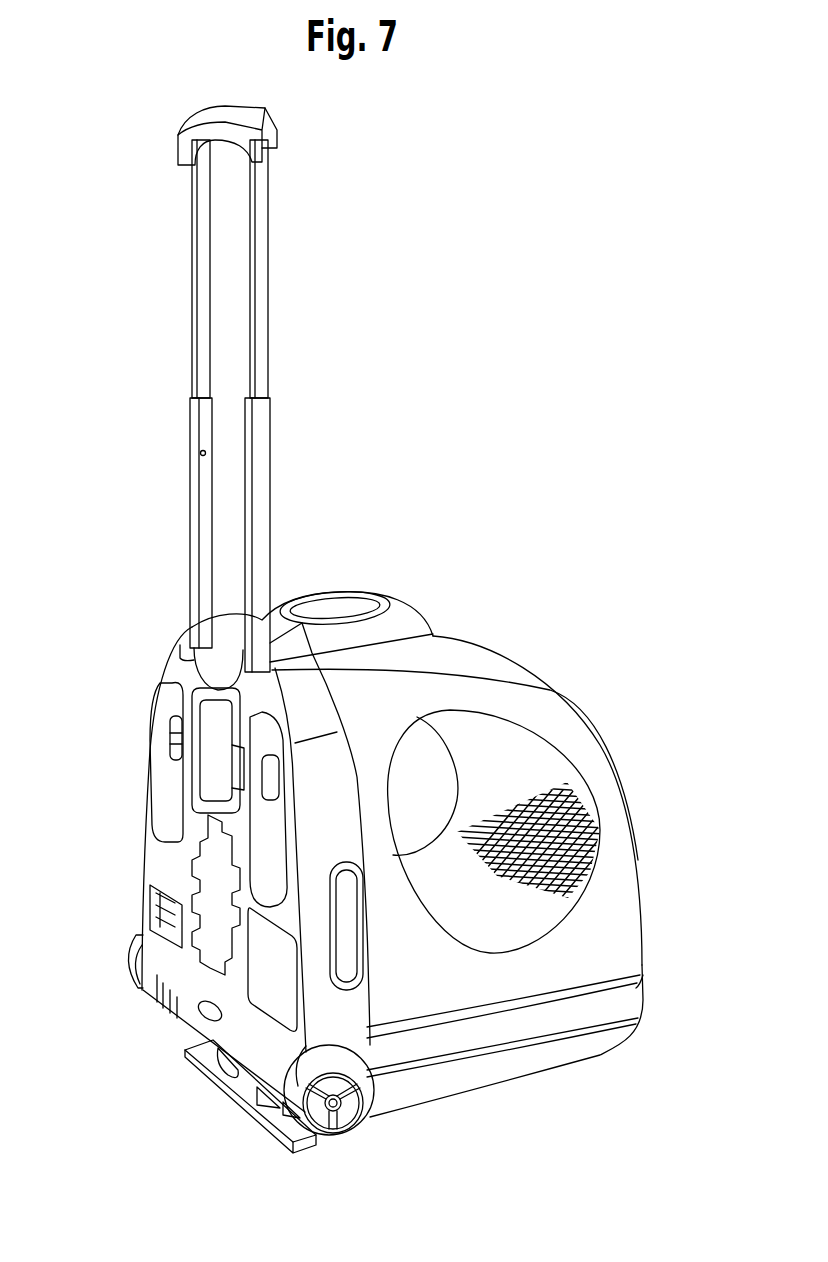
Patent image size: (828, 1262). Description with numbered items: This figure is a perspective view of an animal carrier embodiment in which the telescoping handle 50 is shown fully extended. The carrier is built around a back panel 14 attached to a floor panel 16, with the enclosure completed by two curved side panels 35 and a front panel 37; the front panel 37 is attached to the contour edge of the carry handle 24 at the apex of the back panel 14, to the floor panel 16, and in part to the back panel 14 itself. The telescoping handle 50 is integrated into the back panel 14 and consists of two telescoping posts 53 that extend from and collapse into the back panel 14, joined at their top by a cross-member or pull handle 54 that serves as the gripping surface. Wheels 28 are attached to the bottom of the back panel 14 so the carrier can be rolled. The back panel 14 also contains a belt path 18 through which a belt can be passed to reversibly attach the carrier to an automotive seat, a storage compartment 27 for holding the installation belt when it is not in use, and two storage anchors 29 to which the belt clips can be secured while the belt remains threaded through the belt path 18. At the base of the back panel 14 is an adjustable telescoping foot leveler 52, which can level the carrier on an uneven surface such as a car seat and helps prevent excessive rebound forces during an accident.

The back panel 14 is at (172, 668).
The floor panel 16 is at (560, 1052).
The belt path 18 is at (352, 962).
The carry handle 24 is at (397, 610).
The storage compartment 27 is at (205, 718).
The wheels 28 is at (125, 962).
The storage anchors 29 is at (268, 777).
The side panels 35 is at (505, 697).
The front panel 37 is at (465, 652).
The telescoping handle 50 is at (340, 338).
The adjustable telescoping foot leveler 52 is at (237, 1090).
The telescoping posts 53 is at (268, 205).
The cross-member or pull handle 54 is at (258, 110).